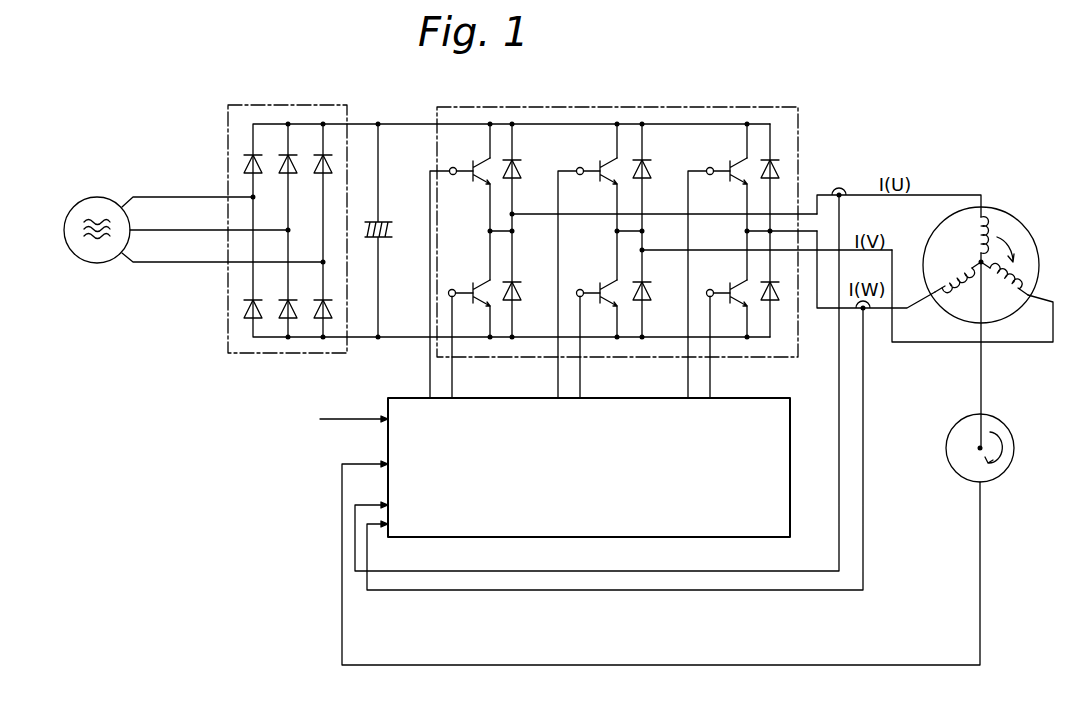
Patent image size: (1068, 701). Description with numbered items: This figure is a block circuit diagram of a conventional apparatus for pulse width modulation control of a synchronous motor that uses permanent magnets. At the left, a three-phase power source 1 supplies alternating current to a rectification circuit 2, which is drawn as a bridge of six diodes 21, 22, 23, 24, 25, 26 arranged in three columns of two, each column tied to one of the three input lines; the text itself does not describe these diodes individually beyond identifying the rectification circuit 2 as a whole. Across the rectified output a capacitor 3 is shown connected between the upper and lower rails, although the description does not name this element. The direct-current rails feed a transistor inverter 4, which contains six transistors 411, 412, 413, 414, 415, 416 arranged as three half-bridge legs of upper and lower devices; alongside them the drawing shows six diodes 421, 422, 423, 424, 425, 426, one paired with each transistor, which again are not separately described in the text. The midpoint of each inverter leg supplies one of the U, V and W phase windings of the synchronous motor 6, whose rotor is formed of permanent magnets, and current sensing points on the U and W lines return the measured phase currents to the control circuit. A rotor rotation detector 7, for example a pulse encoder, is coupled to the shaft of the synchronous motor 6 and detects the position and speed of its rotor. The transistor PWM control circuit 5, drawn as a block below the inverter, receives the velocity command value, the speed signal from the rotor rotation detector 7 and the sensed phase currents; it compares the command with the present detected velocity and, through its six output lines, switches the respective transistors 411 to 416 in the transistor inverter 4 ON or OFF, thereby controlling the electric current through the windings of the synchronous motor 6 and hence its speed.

The three-phase power source 1 is at (100, 195).
The rectification circuit 2 is at (312, 105).
The rectifier diode 21 is at (246, 156).
The rectifier diode 22 is at (244, 318).
The rectifier diode 23 is at (286, 153).
The rectifier diode 24 is at (282, 318).
The rectifier diode 25 is at (328, 155).
The rectifier diode 26 is at (318, 318).
The smoothing capacitor 3 is at (394, 229).
The transistor inverter 4 is at (577, 107).
The transistor 411 is at (469, 161).
The transistor 412 is at (469, 283).
The transistor 413 is at (597, 182).
The transistor 414 is at (591, 281).
The transistor 415 is at (725, 182).
The transistor 416 is at (723, 284).
The flywheel diode 421 is at (521, 166).
The flywheel diode 422 is at (503, 280).
The flywheel diode 423 is at (651, 166).
The flywheel diode 424 is at (633, 280).
The flywheel diode 425 is at (784, 167).
The flywheel diode 426 is at (762, 280).
The transistor PWM control circuit 5 is at (793, 410).
The synchronous motor 6 is at (1027, 224).
The rotor rotation detector 7 is at (1013, 429).